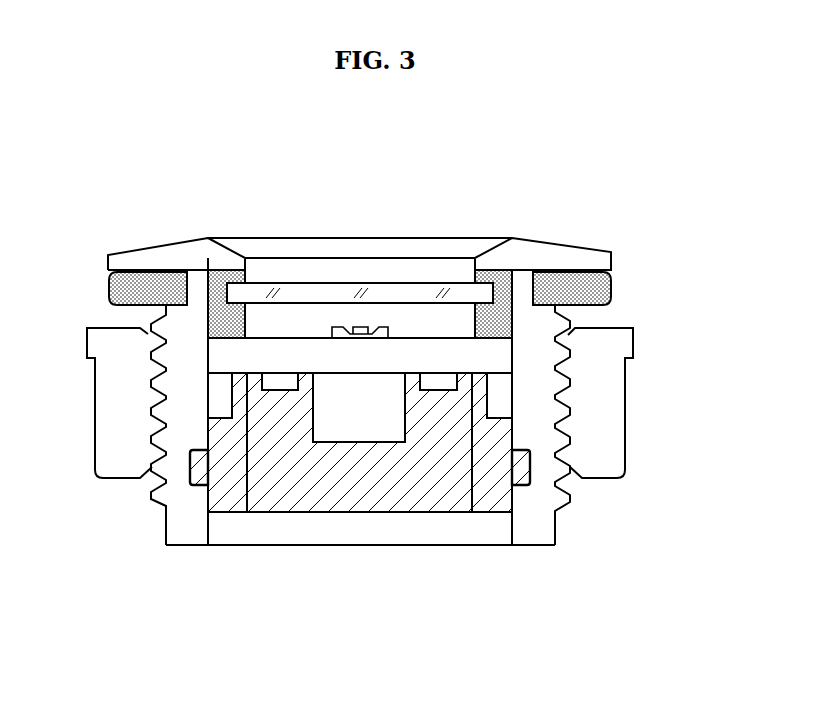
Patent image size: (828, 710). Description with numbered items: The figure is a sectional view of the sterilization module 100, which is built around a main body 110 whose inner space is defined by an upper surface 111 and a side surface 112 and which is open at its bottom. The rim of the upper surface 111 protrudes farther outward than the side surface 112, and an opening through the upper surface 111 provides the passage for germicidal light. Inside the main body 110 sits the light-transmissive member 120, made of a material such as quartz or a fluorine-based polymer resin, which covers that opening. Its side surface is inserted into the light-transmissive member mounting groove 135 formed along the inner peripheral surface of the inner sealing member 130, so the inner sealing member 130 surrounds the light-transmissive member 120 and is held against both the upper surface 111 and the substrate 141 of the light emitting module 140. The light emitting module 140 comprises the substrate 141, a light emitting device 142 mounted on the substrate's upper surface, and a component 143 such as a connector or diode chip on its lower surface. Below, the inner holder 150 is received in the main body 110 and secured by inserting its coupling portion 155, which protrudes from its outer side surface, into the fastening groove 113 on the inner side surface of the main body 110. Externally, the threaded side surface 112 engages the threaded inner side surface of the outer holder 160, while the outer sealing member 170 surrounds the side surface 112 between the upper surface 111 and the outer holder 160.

The sterilization module 100 is at (83, 177).
The main body 110 is at (580, 198).
The upper surface 111 is at (577, 258).
The side surface 112 is at (530, 318).
The fastening groove 113 is at (195, 485).
The light-transmissive member 120 is at (453, 288).
The inner sealing member 130 is at (238, 277).
The light-transmissive member mounting groove 135 is at (213, 268).
The light emitting module 140 is at (398, 190).
The substrate 141 is at (300, 350).
The light emitting device 142 is at (338, 327).
The component 143 is at (397, 378).
The inner holder 150 is at (302, 487).
The coupling portion 155 is at (202, 462).
The outer holder 160 is at (613, 410).
The outer sealing member 170 is at (602, 283).